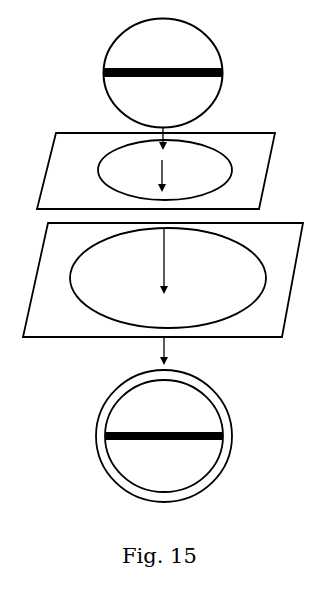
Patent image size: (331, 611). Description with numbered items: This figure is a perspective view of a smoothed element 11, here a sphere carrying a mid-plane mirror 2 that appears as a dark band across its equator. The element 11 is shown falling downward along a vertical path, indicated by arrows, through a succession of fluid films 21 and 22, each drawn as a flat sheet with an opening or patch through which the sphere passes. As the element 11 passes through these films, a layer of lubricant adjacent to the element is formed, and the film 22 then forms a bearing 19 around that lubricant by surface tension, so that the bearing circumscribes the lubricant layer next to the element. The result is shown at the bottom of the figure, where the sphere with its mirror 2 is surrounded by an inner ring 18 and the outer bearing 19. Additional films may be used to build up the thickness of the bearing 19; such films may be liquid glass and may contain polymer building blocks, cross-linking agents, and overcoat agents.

The mid-plane mirror 2 is at (126, 66).
The smoothed element 11 is at (220, 56).
The inner ring 18 is at (140, 380).
The bearing 19 is at (214, 392).
The fluid film 21 is at (226, 134).
The fluid film 22 is at (270, 230).